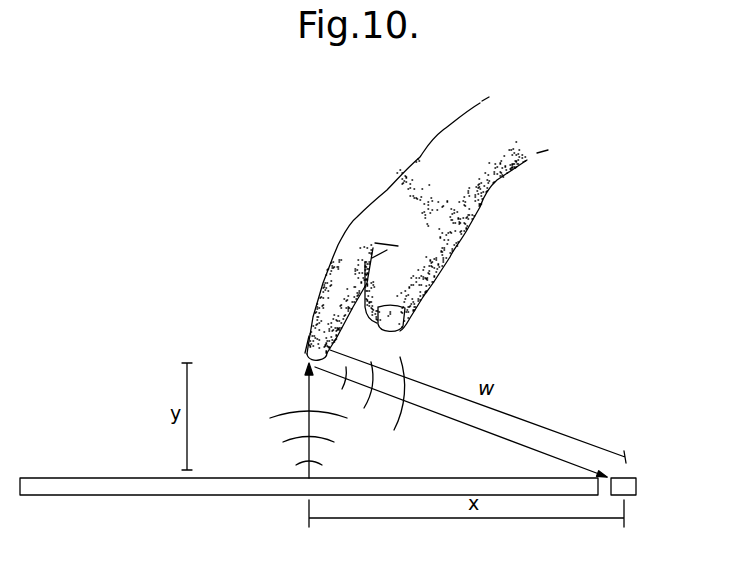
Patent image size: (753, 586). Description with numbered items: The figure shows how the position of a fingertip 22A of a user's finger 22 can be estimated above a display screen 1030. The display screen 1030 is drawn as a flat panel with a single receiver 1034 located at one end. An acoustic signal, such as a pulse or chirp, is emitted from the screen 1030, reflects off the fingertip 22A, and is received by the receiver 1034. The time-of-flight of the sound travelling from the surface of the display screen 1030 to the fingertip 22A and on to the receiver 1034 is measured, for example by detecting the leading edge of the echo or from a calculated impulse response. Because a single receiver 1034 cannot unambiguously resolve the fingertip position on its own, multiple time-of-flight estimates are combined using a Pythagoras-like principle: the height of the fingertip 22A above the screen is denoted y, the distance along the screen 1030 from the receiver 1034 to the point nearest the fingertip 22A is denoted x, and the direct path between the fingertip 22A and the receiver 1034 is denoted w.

The finger 22 is at (387, 197).
The fingertip 22A is at (305, 357).
The display screen 1030 is at (123, 489).
The receiver 1034 is at (636, 486).